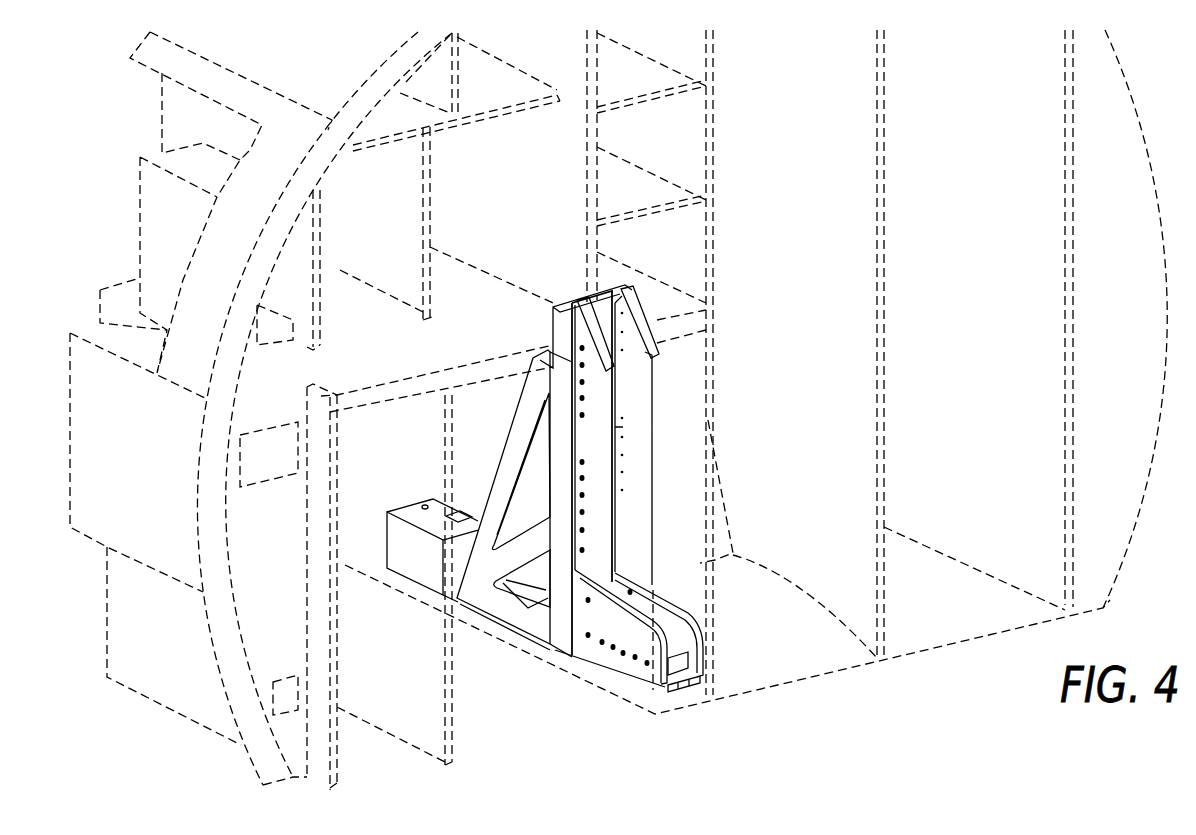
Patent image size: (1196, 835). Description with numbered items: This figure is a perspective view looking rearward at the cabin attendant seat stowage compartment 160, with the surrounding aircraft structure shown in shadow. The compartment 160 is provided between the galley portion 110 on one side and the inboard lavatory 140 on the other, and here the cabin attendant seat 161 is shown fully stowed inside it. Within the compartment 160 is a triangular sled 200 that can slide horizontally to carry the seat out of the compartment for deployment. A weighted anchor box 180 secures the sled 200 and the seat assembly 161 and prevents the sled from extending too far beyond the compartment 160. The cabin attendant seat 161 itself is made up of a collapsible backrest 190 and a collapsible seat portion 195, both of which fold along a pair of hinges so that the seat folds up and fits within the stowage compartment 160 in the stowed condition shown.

The galley portion 110 is at (463, 433).
The inboard lavatory 140 is at (823, 350).
The cabin attendant seat stowage compartment 160 is at (685, 352).
The cabin attendant seat 161 is at (478, 490).
The weighted anchor box 180 is at (430, 573).
The collapsible backrest 190 is at (633, 478).
The collapsible seat portion 195 is at (687, 640).
The triangular sled 200 is at (540, 632).